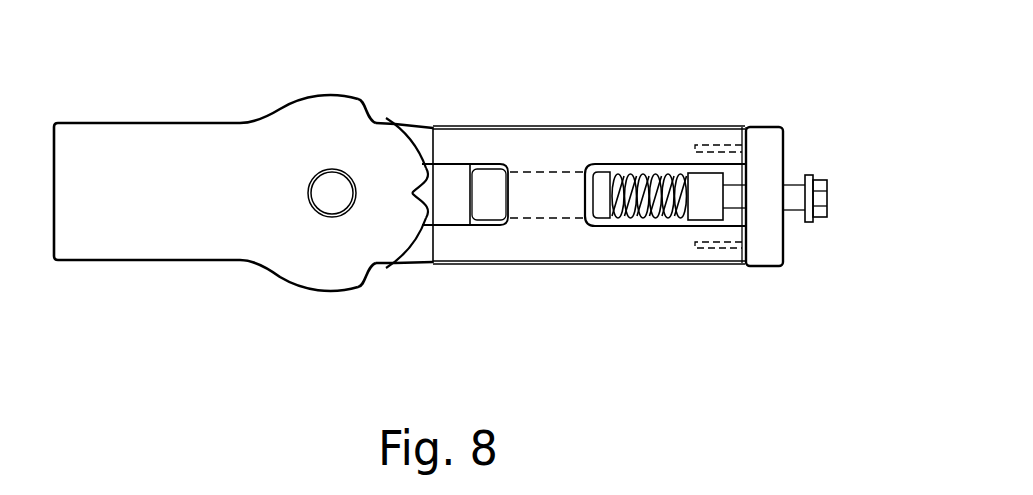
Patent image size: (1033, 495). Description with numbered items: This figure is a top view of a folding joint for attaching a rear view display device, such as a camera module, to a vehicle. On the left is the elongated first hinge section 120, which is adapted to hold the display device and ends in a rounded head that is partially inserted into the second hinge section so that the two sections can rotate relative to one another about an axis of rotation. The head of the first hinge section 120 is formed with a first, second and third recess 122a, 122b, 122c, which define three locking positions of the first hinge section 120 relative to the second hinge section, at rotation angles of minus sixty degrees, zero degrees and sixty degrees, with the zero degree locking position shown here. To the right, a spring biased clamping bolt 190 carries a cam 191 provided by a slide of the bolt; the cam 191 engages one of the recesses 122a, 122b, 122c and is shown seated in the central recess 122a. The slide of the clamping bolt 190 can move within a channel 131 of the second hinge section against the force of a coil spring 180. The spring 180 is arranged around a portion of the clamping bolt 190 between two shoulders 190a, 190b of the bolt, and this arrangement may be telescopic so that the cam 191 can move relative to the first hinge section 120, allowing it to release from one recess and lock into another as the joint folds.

The first hinge section 120 is at (148, 214).
The first recess 122a is at (412, 194).
The second recess 122b is at (381, 266).
The third recess 122c is at (377, 120).
The channel 131 is at (669, 227).
The coil spring 180 is at (650, 200).
The clamping bolt 190 is at (776, 156).
The shoulder 190a is at (603, 166).
The shoulder 190b is at (693, 178).
The cam 191 is at (440, 164).